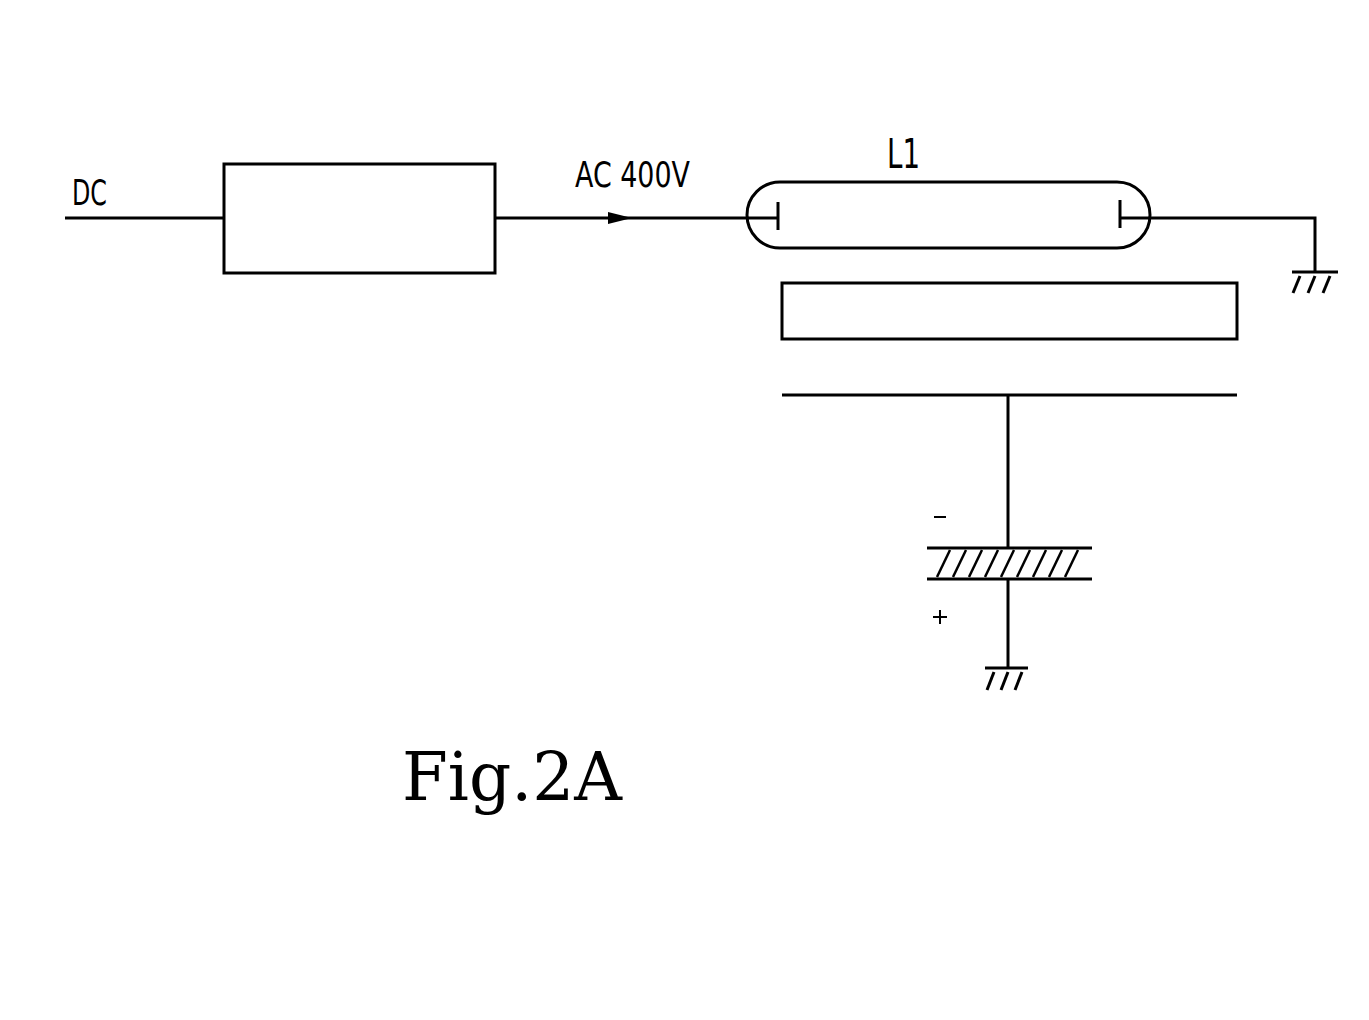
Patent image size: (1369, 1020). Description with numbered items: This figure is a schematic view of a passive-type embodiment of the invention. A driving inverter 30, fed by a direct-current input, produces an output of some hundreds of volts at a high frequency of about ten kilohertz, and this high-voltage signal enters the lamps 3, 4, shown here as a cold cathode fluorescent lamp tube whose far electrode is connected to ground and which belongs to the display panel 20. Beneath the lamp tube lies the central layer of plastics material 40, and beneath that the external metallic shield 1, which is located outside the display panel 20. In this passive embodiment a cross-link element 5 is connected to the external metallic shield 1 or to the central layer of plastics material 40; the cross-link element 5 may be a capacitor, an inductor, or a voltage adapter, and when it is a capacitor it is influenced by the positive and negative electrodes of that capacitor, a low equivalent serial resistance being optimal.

The external metallic shield 1 is at (1207, 395).
The lamp 3 is at (1085, 205).
The lamp 4 is at (948, 215).
The cross-link element 5 is at (1126, 614).
The display panel 20 is at (1215, 175).
The driving inverter 30 is at (443, 253).
The central layer of plastics material 40 is at (845, 310).